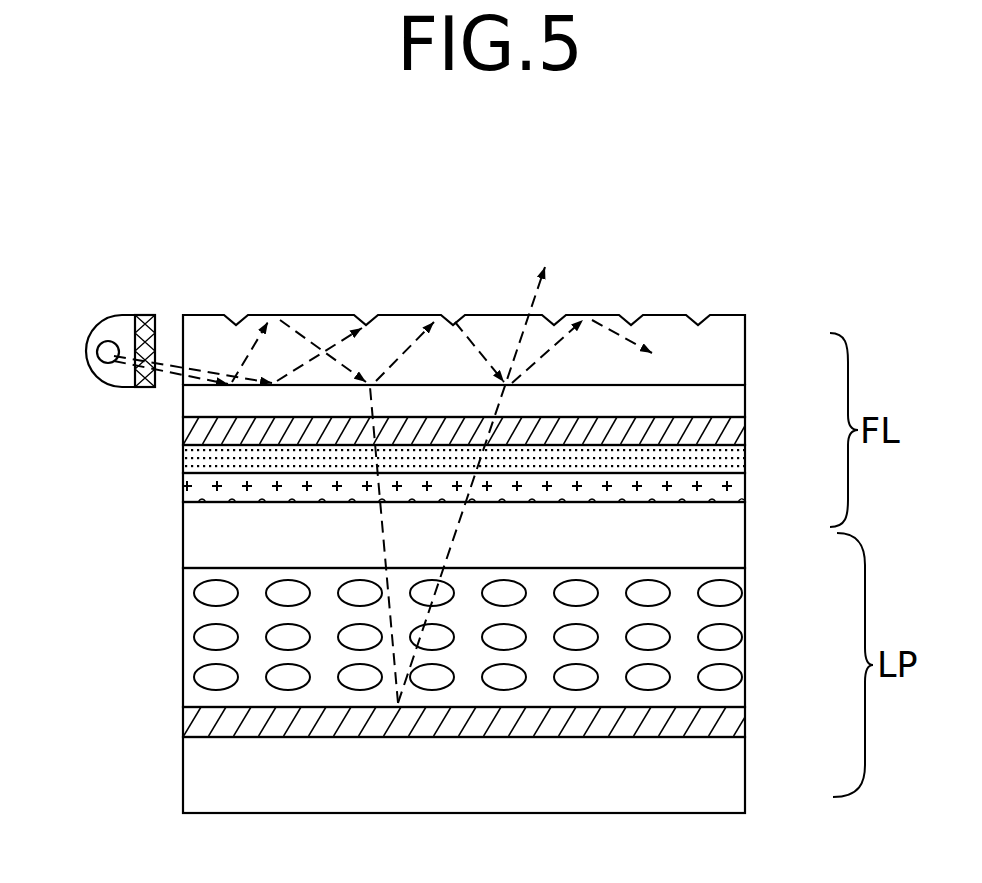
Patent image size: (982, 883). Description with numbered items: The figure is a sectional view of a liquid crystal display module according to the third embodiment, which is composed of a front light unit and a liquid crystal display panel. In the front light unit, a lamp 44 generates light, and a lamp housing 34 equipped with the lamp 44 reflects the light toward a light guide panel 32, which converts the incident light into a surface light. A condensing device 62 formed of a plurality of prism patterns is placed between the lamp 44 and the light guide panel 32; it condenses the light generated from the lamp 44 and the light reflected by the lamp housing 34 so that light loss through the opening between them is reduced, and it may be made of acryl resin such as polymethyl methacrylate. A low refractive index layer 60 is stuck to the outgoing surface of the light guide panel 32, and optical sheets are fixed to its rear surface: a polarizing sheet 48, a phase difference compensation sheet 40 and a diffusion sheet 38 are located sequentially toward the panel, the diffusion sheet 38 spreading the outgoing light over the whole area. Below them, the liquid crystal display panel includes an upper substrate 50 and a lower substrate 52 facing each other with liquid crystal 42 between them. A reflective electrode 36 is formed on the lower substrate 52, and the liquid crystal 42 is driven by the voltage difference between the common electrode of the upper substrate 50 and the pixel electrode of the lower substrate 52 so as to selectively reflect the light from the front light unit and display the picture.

The light guide panel 32 is at (745, 350).
The low refractive index layer 60 is at (745, 393).
The polarizing sheet 48 is at (745, 430).
The phase difference compensation sheet 40 is at (745, 462).
The diffusion sheet 38 is at (745, 492).
The upper substrate 50 is at (745, 550).
The liquid crystal 42 is at (717, 640).
The reflective electrode 36 is at (745, 720).
The lower substrate 52 is at (745, 770).
The lamp housing 34 is at (90, 341).
The lamp 44 is at (103, 362).
The condensing device 62 is at (147, 315).